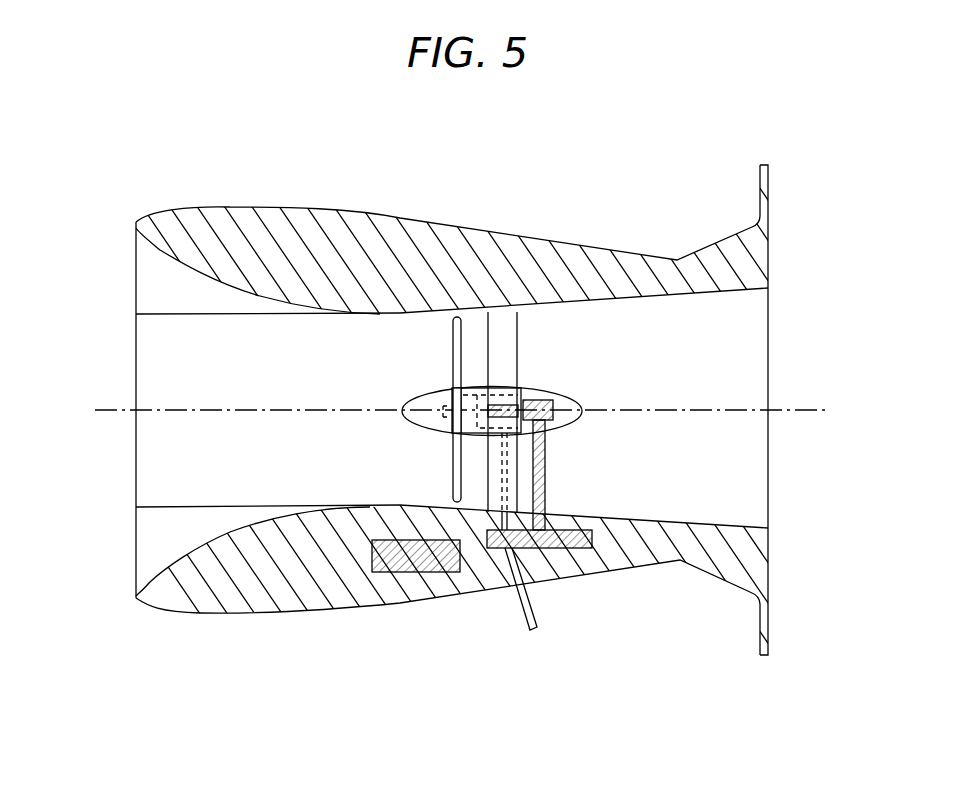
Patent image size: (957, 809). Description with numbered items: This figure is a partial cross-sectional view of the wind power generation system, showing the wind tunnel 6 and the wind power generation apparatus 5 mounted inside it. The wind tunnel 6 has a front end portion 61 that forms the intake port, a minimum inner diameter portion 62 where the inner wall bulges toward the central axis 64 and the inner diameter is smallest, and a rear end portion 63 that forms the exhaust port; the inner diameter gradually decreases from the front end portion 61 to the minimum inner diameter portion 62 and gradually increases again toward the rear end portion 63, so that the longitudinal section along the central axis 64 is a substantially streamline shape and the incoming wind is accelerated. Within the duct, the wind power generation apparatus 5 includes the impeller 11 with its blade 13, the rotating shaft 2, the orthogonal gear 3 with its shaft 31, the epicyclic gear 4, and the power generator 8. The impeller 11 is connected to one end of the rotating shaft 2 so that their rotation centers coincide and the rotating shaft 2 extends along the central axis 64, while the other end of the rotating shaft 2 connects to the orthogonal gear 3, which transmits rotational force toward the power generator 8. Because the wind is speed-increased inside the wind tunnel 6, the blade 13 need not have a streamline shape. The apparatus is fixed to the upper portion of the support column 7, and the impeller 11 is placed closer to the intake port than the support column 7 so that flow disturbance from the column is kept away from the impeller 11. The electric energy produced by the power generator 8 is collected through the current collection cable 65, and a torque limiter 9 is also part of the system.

The wind tunnel 6 is at (478, 418).
The front end portion 61 is at (130, 212).
The minimum inner diameter portion 62 is at (395, 300).
The rear end portion 63 is at (786, 541).
The central axis 64 is at (795, 410).
The blade 13 is at (453, 316).
The support column 7 is at (503, 320).
The wind power generation apparatus 5 is at (572, 424).
The rotating shaft 2 is at (451, 445).
The impeller 11 is at (456, 387).
The epicyclic gear 4 is at (512, 406).
The orthogonal gear 3 is at (540, 404).
The shaft 31 is at (547, 482).
The power generator 8 is at (577, 549).
The torque limiter 9 is at (414, 574).
The current collection cable 65 is at (518, 617).